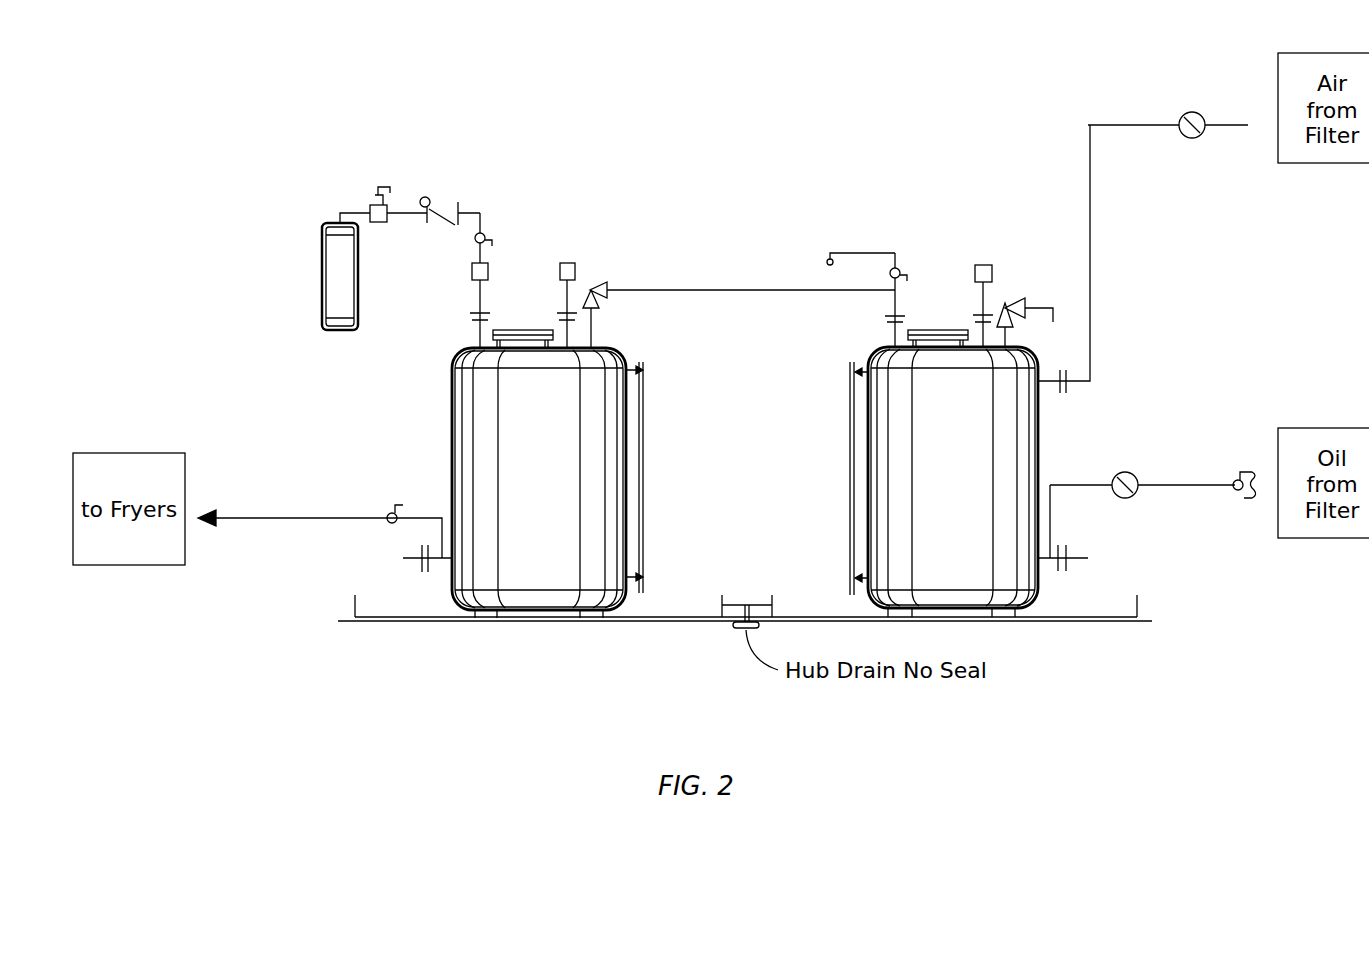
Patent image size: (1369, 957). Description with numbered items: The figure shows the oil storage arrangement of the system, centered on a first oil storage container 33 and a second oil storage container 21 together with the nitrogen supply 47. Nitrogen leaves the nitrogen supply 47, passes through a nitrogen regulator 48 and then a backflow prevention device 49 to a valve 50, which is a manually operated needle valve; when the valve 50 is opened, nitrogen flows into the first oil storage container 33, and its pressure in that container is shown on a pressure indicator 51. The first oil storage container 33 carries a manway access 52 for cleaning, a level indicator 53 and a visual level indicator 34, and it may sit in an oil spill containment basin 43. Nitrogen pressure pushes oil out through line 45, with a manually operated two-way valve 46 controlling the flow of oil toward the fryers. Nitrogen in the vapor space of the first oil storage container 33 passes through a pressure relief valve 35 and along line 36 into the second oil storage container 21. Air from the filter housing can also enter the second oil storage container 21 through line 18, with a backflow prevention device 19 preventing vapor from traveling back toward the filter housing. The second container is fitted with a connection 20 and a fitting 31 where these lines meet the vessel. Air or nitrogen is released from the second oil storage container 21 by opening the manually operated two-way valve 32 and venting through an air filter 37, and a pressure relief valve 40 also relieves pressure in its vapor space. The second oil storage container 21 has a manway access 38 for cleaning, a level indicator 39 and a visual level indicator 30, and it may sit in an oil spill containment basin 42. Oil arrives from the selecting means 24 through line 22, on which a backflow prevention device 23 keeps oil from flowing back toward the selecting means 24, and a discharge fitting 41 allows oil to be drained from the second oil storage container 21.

The line 18 is at (1237, 128).
The backflow prevention device 19 is at (1185, 116).
The air pipe to second tank 20 is at (1080, 380).
The second oil storage container 21 is at (876, 548).
The line 22 is at (1053, 482).
The backflow prevention device 23 is at (1135, 476).
The selecting means 24 is at (1237, 492).
The visual level indicator 30 is at (848, 425).
The vent pipe connection 31 is at (890, 315).
The valve 32 is at (893, 267).
The first oil storage container 33 is at (615, 548).
The visual level indicator 34 is at (645, 428).
The pressure relief valve 35 is at (600, 305).
The line 36 is at (740, 288).
The air filter 37 is at (828, 260).
The manway of second tank 38 is at (955, 330).
The level indicator 39 is at (990, 264).
The pressure relief valve 40 is at (1010, 304).
The discharge fitting 41 is at (1068, 556).
The oil spill containment basin 42 is at (1140, 611).
The oil spill containment basin 43 is at (352, 608).
The line 45 is at (332, 518).
The valve 46 is at (390, 511).
The nitrogen supply 47 is at (325, 280).
The nitrogen regulator 48 is at (368, 210).
The backflow prevention device 49 is at (432, 195).
The valve 50 is at (484, 233).
The pressure indicator 51 is at (488, 270).
The manway access 52 is at (498, 330).
The level indicator 53 is at (574, 265).